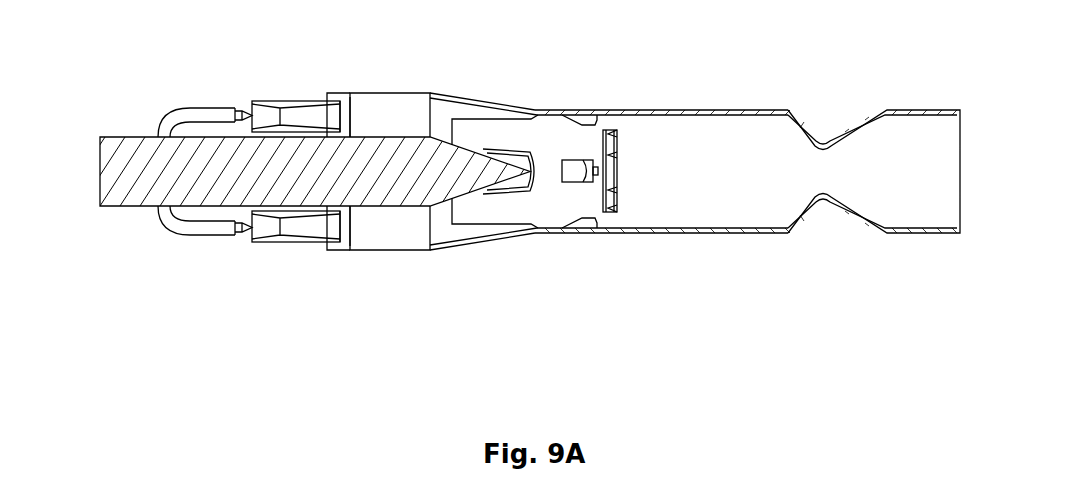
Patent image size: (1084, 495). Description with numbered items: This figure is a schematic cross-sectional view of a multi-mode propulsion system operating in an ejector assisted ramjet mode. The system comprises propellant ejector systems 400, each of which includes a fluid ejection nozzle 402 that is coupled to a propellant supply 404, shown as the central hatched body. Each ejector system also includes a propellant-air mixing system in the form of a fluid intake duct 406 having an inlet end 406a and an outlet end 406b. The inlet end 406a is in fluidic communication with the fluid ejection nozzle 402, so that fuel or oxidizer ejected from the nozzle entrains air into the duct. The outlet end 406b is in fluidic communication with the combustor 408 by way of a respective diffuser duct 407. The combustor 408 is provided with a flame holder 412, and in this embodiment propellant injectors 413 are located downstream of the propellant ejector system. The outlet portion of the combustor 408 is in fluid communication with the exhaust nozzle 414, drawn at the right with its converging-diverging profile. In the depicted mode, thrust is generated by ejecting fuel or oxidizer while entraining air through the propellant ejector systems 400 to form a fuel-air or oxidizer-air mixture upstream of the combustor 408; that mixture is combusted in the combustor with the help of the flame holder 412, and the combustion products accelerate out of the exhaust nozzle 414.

The propellant ejector system 400 is at (318, 93).
The fluid ejection nozzle 402 is at (243, 232).
The propellant supply 404 is at (133, 175).
The fluid intake duct 406 is at (300, 118).
The inlet end 406a is at (250, 108).
The outlet end 406b is at (340, 105).
The diffuser duct 407 is at (387, 232).
The combustor 408 is at (787, 103).
The flame holder 412 is at (617, 193).
The propellant injectors 413 is at (583, 118).
The exhaust nozzle 414 is at (957, 103).